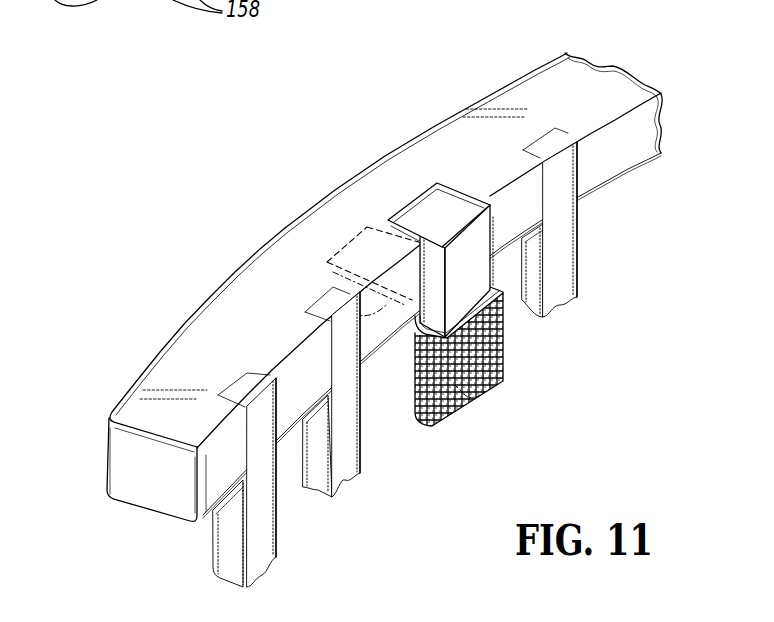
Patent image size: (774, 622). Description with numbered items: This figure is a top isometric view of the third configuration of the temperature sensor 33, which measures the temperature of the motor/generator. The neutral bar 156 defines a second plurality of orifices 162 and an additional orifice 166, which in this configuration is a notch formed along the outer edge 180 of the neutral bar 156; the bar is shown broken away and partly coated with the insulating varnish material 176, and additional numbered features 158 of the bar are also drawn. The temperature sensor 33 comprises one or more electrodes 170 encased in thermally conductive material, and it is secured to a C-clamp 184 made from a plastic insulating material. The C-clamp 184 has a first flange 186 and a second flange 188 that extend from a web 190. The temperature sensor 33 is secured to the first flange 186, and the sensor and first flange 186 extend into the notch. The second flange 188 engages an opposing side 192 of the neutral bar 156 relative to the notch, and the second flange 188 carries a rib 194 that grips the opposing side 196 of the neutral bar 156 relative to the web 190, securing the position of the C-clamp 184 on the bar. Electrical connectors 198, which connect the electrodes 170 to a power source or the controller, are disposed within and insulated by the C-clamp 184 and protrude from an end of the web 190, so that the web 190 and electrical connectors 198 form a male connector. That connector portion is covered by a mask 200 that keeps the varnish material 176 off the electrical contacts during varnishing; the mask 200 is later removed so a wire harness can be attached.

The temperature sensor 33 is at (331, 220).
The neutral bar 156 is at (176, 328).
The prongs 158 is at (280, 540).
The second plurality of orifices 162 is at (233, 386).
The orifice 166 is at (436, 193).
The electrodes 170 is at (360, 228).
The insulating varnish material 176 is at (617, 66).
The outer edge 180 is at (377, 323).
The C-clamp 184 is at (500, 263).
The first flange 186 is at (449, 213).
The second flange 188 is at (332, 290).
The web 190 is at (482, 292).
The opposing side 192 is at (158, 512).
The rib 194 is at (345, 232).
The opposing side 196 is at (112, 458).
The electrical connectors 198 is at (480, 410).
The mask 200 is at (458, 418).